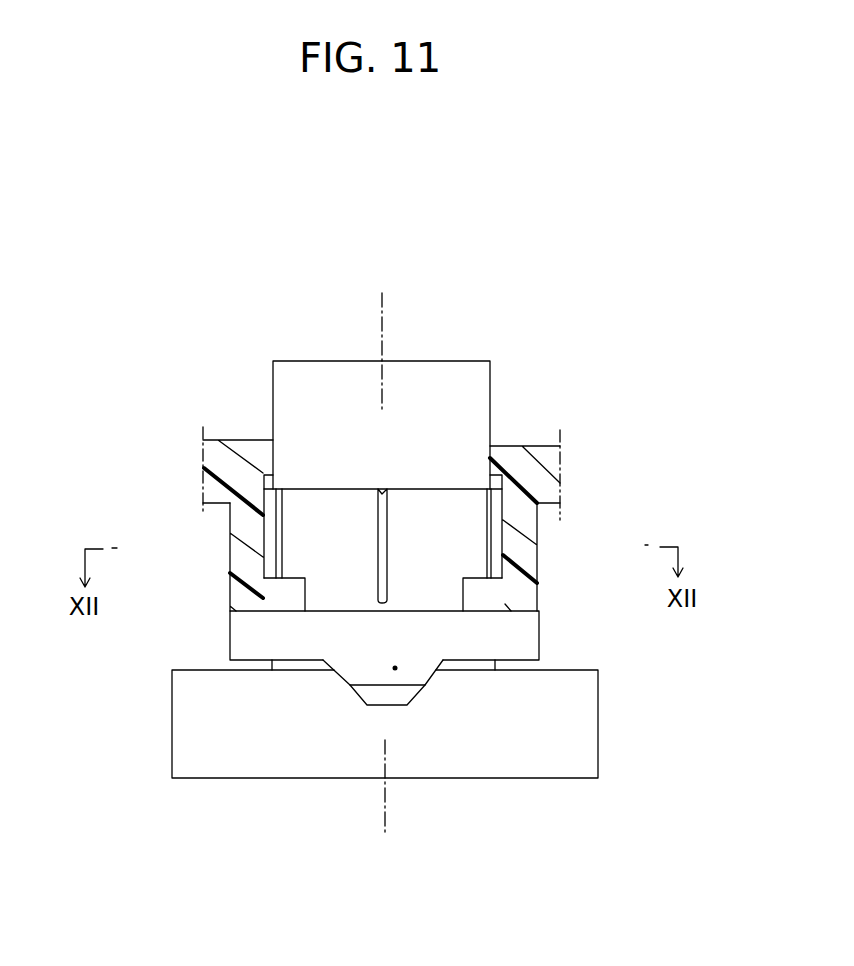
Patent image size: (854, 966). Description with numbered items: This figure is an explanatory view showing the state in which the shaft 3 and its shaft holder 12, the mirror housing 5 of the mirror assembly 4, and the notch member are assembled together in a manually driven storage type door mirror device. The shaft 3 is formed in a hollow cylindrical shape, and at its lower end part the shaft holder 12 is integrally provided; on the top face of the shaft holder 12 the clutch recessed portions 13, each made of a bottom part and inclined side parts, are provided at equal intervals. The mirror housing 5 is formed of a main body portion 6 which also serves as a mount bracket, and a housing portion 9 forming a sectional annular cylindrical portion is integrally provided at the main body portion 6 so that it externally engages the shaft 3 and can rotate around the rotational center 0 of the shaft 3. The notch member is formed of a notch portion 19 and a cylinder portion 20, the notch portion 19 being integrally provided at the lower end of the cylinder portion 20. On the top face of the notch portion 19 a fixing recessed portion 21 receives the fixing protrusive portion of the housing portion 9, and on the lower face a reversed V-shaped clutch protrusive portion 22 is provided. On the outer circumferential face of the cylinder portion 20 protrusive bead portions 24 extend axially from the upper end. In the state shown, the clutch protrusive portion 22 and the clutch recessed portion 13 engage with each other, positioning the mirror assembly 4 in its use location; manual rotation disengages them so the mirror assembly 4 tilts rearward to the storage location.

The rotational center 0 is at (385, 564).
The shaft 3 is at (292, 338).
The mirror assembly 4 is at (219, 415).
The mirror housing 5 is at (578, 443).
The main body portion 6 is at (541, 446).
The housing portion 9 is at (230, 520).
The shaft holder 12 is at (172, 765).
The clutch recessed portion 13 is at (368, 708).
The notch portion 19 is at (523, 636).
The cylinder portion 20 is at (497, 548).
The fixing recessed portion 21 is at (330, 611).
The clutch protrusive portion 22 is at (395, 668).
The protrusive portion 24 is at (387, 530).